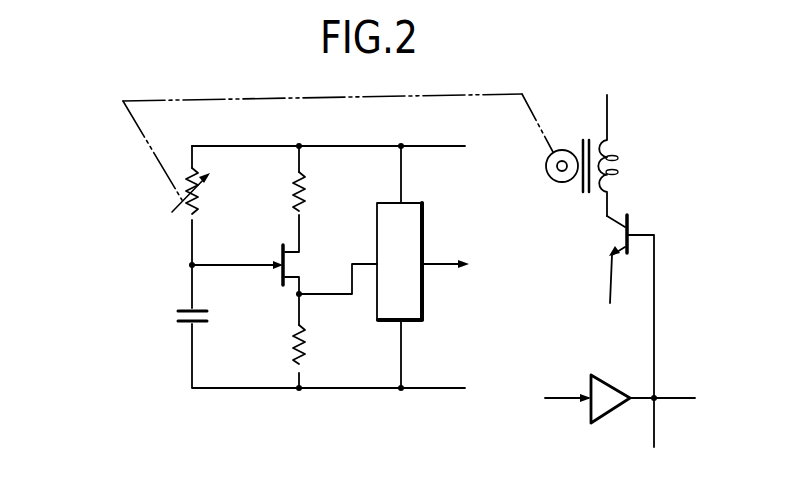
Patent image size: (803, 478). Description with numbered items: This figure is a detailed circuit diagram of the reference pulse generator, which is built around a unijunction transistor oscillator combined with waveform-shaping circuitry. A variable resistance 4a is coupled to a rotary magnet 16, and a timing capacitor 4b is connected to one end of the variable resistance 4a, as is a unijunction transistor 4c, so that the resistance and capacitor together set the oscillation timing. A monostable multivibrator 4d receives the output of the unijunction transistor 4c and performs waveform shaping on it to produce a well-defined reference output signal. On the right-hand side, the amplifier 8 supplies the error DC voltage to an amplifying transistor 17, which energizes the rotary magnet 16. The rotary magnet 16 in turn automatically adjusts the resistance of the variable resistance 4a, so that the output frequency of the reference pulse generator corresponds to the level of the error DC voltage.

The variable resistance 4a is at (181, 201).
The timing capacitor 4b is at (178, 318).
The unijunction transistor 4c is at (288, 263).
The monostable multivibrator 4d is at (408, 231).
The rotary magnet 16 is at (579, 145).
The amplifying transistor 17 is at (618, 232).
The amplifier 8 is at (591, 386).